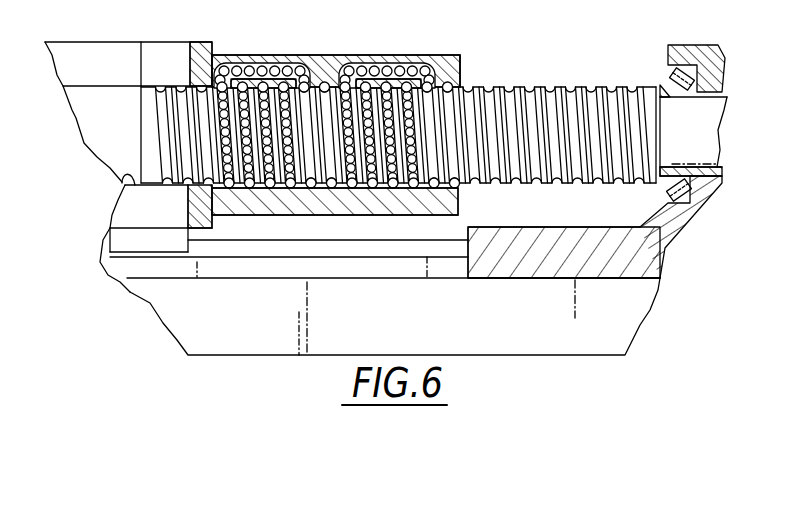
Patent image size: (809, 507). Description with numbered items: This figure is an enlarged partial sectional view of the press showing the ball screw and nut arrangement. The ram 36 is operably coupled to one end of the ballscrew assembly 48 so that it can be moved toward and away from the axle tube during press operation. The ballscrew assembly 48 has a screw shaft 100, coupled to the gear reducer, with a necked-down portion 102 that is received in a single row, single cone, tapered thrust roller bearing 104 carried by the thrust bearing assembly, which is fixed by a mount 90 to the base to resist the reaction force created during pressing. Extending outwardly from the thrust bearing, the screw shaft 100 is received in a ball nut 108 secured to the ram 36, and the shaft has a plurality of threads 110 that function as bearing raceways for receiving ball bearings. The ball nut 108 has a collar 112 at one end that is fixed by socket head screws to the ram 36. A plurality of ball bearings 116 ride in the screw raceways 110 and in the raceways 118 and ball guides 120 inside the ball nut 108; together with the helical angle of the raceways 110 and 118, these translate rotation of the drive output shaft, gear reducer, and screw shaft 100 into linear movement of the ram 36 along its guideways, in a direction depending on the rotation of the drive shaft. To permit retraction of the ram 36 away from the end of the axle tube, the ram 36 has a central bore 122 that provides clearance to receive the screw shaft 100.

The ram 36 is at (113, 50).
The ballscrew assembly 48 is at (256, 38).
The mount 90 is at (665, 248).
The screw shaft 100 is at (543, 84).
The necked-down portion 102 is at (722, 105).
The tapered thrust roller bearing 104 is at (658, 75).
The ball nut 108 is at (460, 57).
The threads 110 is at (470, 86).
The collar 112 is at (207, 228).
The ball bearings 116 is at (455, 57).
The raceways 118 is at (333, 62).
The ball guides 120 is at (300, 62).
The central bore 122 is at (120, 175).